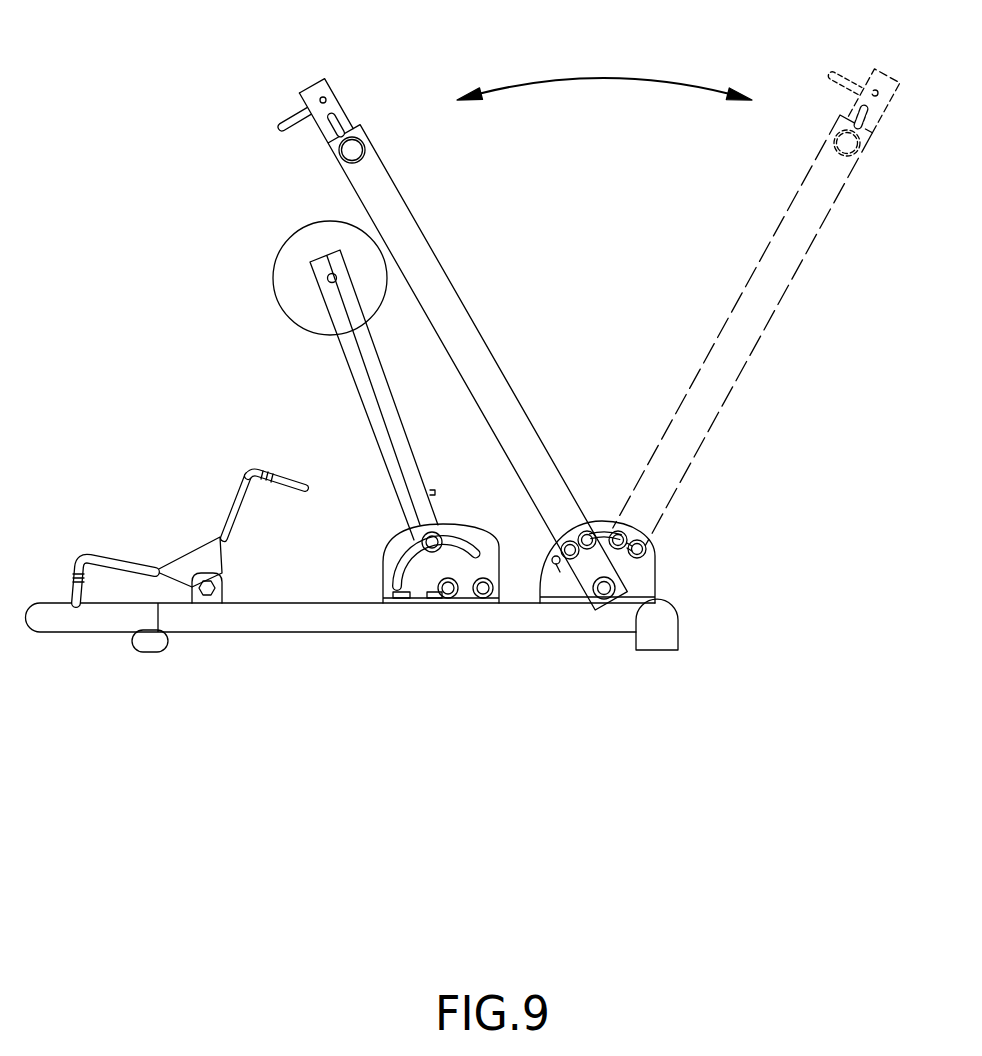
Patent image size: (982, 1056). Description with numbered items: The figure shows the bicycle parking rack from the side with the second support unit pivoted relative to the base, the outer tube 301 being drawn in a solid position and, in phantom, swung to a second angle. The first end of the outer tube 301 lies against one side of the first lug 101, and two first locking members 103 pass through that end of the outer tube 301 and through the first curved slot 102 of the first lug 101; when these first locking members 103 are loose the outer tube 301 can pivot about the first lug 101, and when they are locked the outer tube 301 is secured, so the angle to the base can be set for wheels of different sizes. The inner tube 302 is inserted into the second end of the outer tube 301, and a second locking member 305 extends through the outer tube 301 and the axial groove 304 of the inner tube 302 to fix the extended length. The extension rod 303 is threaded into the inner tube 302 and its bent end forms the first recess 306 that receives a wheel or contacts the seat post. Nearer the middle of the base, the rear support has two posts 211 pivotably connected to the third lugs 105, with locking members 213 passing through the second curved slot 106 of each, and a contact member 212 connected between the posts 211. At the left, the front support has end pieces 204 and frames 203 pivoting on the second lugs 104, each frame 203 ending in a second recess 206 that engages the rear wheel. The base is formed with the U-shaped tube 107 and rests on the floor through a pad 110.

The first lug 101 is at (647, 575).
The first curved slot 102 is at (558, 567).
The first locking members 103 is at (566, 544).
The second lugs 104 is at (217, 603).
The third lugs 105 is at (418, 588).
The second curved slot 106 is at (392, 586).
The U-shaped tube 107 is at (498, 625).
The pad 110 is at (651, 640).
The frames 203 is at (230, 500).
The end pieces 204 is at (195, 552).
The second recess 206 is at (290, 478).
The posts 211 is at (352, 362).
The contact member 212 is at (282, 254).
The locking members 213 is at (422, 546).
The outer tube 301 is at (422, 255).
The inner tube 302 is at (327, 80).
The extension rod 303 is at (517, 77).
The groove 304 is at (340, 118).
The second locking member 305 is at (360, 155).
The first recess 306 is at (277, 120).